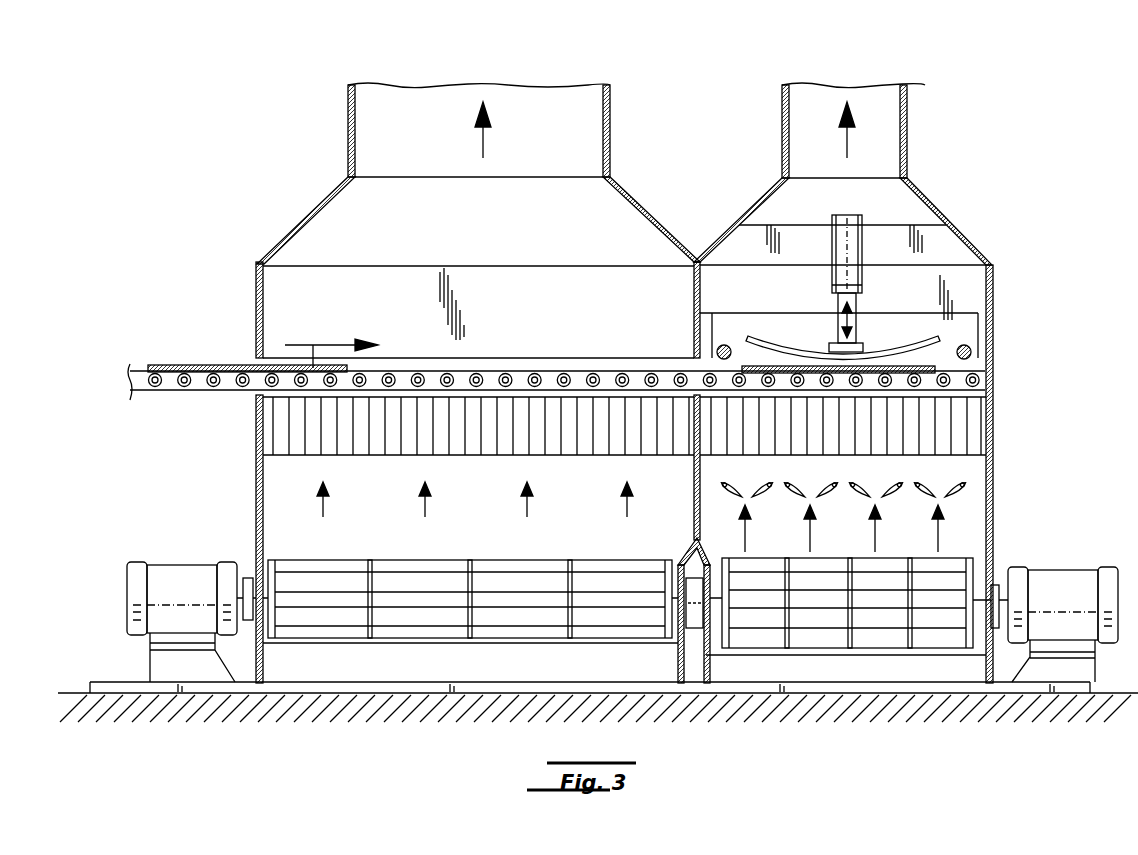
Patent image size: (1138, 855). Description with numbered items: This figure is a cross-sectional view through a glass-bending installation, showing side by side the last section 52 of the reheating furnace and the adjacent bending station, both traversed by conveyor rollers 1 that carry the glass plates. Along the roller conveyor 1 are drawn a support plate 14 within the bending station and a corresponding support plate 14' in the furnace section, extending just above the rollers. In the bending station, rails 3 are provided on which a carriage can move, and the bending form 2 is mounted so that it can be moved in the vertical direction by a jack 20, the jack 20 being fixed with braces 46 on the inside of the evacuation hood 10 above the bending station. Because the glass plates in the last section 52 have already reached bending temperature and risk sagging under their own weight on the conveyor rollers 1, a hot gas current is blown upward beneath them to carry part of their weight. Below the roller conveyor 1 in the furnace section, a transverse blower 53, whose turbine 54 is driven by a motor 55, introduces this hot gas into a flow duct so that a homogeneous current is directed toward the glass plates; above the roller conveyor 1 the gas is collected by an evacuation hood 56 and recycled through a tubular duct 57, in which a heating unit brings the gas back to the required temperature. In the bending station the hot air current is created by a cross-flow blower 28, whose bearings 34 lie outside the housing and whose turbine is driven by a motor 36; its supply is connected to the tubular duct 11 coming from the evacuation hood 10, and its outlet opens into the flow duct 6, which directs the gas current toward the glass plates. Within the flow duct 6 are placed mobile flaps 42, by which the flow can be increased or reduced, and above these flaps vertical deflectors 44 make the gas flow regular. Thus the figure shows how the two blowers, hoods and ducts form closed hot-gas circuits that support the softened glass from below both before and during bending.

The conveyor rollers 1 is at (681, 374).
The bending form 2 is at (797, 348).
The rails 3 is at (724, 345).
The flow duct 6 is at (990, 470).
The evacuation hood 10 is at (922, 190).
The tubular duct 11 is at (885, 108).
The support plate 14 is at (838, 326).
The inlet support plate 14' is at (247, 343).
The jack 20 is at (847, 278).
The cross-flow blower 28 is at (930, 635).
The bearings 34 is at (247, 572).
The motor 36 is at (1070, 583).
The mobile flaps 42 is at (843, 516).
The vertical deflectors 44 is at (955, 420).
The braces 46 is at (803, 235).
The last section of the furnace 52 is at (486, 512).
The transverse blower 53 is at (305, 645).
The turbine 54 is at (547, 600).
The motor 55 is at (170, 578).
The evacuation hood 56 is at (319, 233).
The tubular duct 57 is at (363, 103).